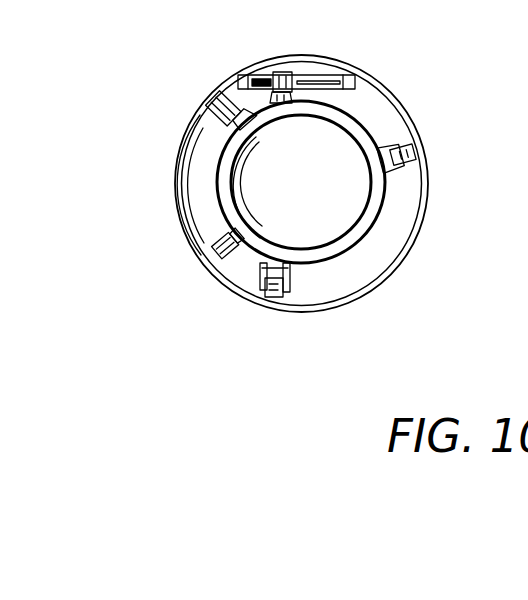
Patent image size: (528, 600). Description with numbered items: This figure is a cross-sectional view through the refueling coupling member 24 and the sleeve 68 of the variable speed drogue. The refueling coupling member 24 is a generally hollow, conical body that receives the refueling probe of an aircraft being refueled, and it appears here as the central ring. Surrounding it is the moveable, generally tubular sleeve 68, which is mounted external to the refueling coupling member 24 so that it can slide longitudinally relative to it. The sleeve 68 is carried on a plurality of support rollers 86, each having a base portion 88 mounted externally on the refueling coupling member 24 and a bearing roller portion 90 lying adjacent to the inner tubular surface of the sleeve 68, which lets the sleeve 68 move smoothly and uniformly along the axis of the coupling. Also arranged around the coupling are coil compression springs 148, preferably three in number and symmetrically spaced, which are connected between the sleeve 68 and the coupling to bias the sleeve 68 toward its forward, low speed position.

The refueling coupling member 24 is at (350, 243).
The sleeve 68 is at (403, 120).
The support rollers 86 is at (208, 137).
The base portion 88 is at (290, 283).
The bearing roller portion 90 is at (215, 103).
The coil compression springs 148 is at (218, 232).